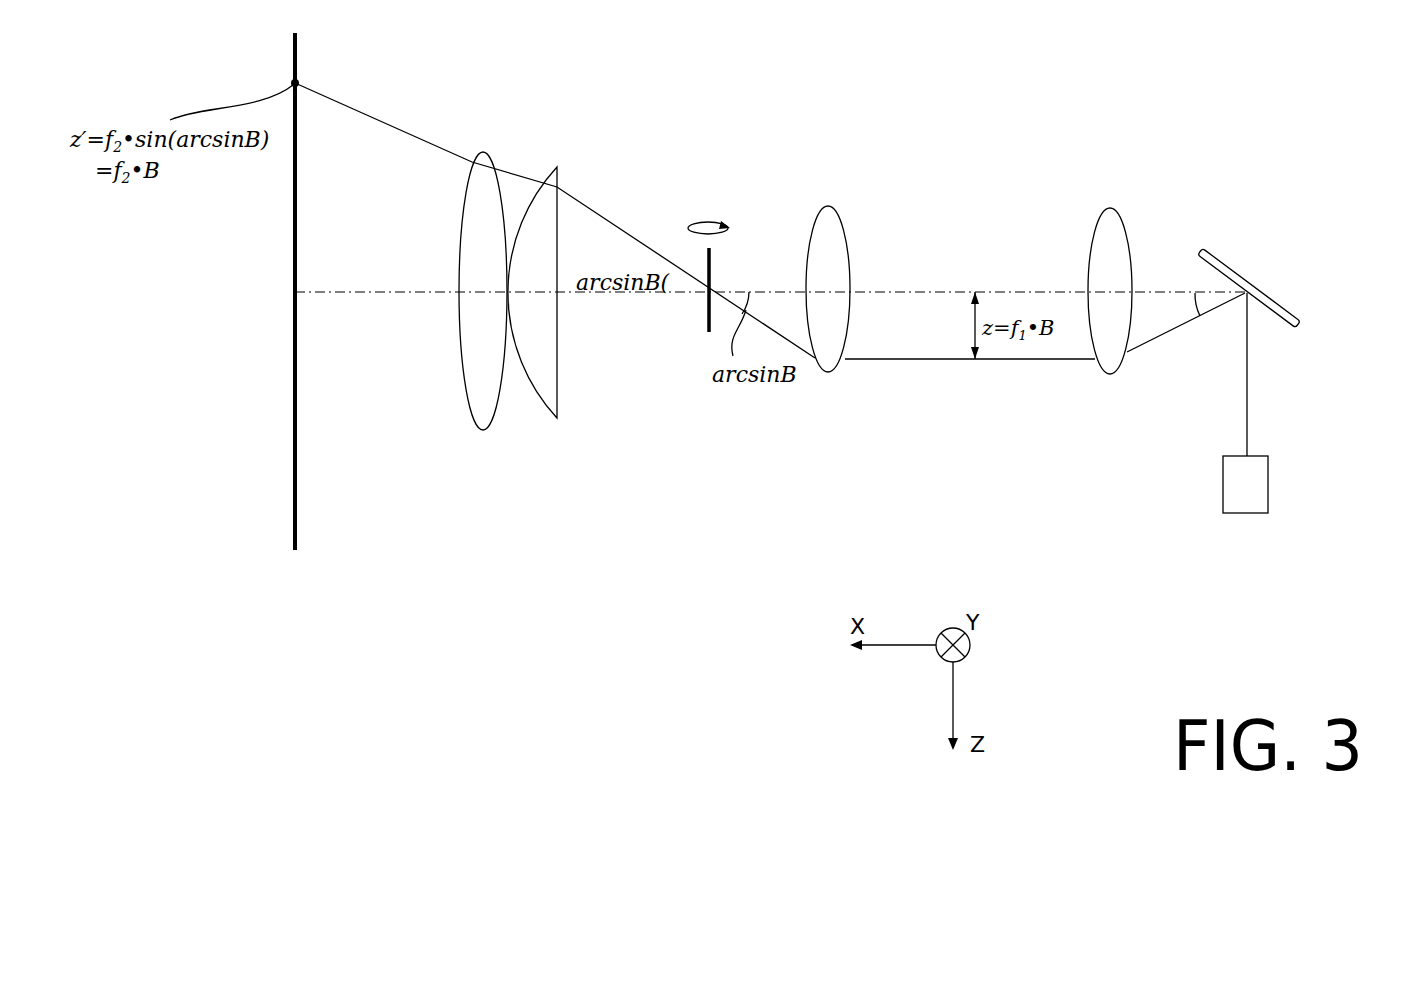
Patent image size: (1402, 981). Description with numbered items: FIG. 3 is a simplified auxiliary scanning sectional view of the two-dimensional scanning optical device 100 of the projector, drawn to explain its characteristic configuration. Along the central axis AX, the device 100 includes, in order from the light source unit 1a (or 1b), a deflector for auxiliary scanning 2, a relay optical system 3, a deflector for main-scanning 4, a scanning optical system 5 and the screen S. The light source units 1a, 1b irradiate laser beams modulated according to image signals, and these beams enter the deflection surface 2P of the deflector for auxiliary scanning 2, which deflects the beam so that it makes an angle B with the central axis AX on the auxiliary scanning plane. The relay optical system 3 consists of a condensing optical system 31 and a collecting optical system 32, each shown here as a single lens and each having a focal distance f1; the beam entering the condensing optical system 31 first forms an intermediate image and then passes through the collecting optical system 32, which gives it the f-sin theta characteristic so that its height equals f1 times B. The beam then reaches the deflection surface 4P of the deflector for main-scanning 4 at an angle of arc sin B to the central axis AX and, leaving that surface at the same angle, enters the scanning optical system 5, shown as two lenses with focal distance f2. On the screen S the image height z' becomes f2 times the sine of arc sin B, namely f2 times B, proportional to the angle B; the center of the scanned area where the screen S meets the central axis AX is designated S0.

The two-dimensional scanning optical device 100 is at (648, 574).
The light source unit 1a is at (1305, 403).
The light source unit 1b is at (1268, 493).
The deflector for auxiliary scanning 2 is at (1226, 264).
The deflection surface 2P is at (1276, 322).
The relay optical system 3 is at (969, 238).
The condensing optical system 31 is at (1090, 271).
The collecting optical system 32 is at (836, 232).
The deflector for main-scanning 4 is at (685, 322).
The deflection surface 4P is at (700, 320).
The scanning optical system 5 is at (560, 143).
The screen S is at (293, 484).
The center of the scanned area S0 is at (277, 297).
The central axis AX is at (383, 294).